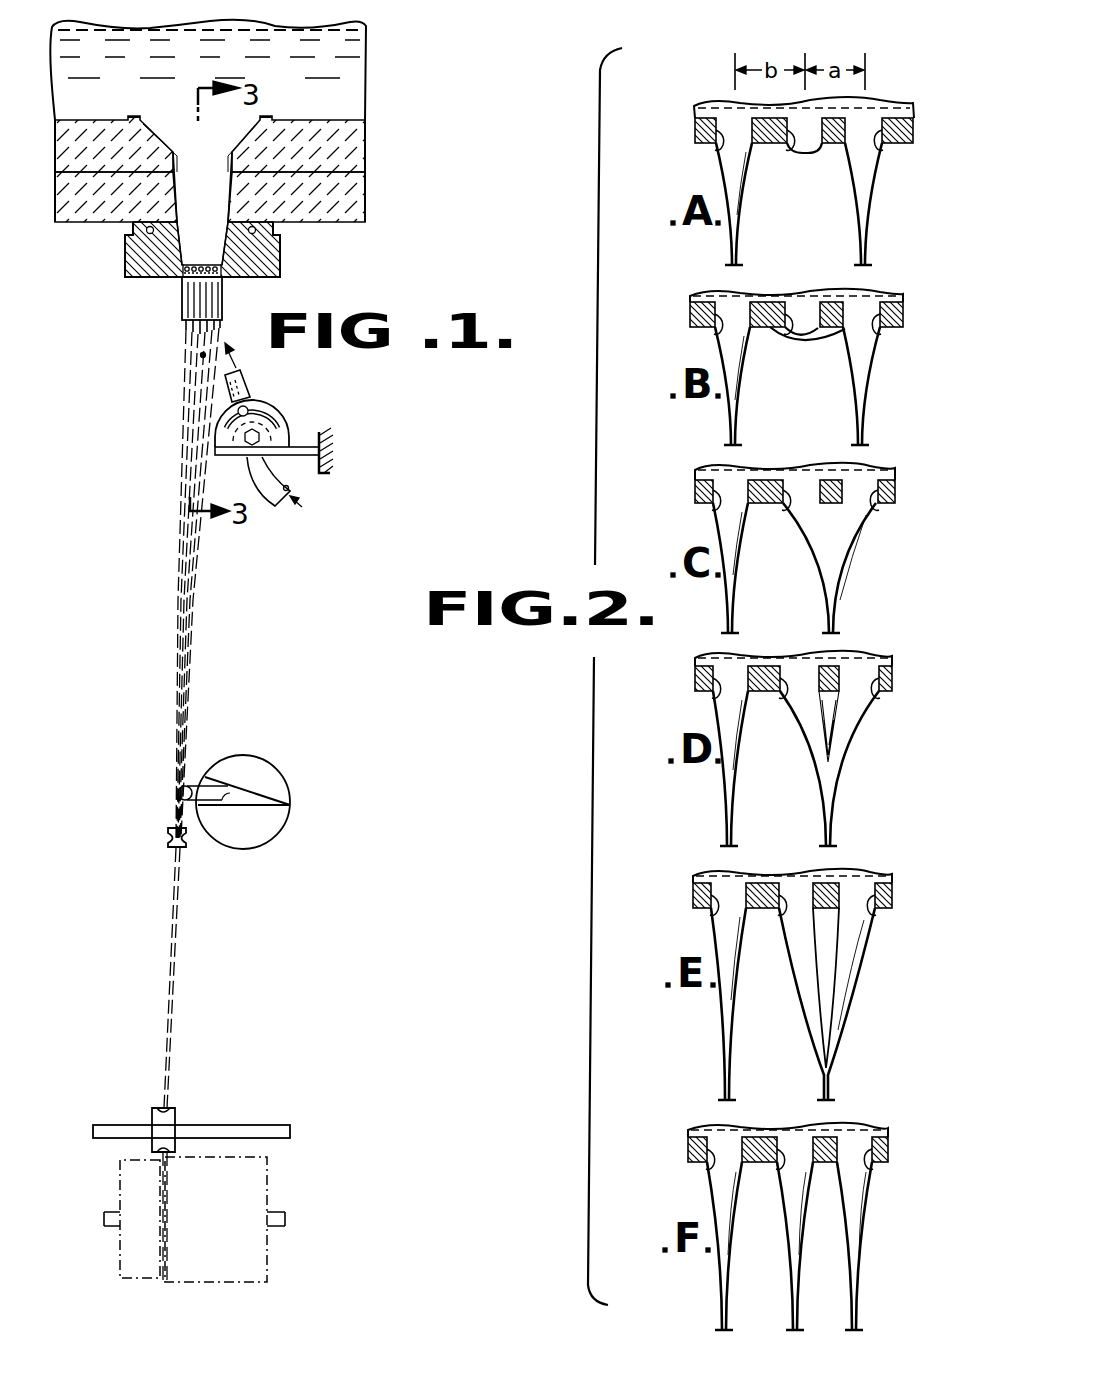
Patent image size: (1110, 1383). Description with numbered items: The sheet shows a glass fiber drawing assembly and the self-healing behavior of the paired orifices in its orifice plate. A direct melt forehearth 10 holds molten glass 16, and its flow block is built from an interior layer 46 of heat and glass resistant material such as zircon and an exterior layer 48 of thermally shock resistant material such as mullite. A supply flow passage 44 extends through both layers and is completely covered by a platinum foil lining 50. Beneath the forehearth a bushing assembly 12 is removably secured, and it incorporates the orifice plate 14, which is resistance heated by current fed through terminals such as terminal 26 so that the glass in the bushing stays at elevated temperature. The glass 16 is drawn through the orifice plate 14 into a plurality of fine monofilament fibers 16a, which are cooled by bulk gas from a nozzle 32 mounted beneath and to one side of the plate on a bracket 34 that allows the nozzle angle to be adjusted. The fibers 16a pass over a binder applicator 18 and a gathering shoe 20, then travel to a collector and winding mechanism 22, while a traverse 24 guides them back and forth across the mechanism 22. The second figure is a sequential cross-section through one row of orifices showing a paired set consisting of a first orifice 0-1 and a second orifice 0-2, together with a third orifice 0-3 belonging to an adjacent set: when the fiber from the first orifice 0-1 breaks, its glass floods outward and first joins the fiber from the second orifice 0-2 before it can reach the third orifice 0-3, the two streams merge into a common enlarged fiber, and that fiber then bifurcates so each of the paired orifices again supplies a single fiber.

In FIG. 1, the direct melt forehearth 10 is at (372, 82).
In FIG. 1, the molten glass 16 is at (368, 38).
In FIG. 1, the monofilament fibers 16a is at (198, 358).
In FIG. 1, the interior layer 46 is at (358, 154).
In FIG. 1, the exterior layer 48 is at (358, 205).
In FIG. 1, the platinum foil lining 50 is at (148, 118).
In FIG. 1, the supply flow passage 44 is at (210, 199).
In FIG. 1, the bushing assembly 12 is at (294, 256).
In FIG. 1, the orifice plate 14 is at (174, 281).
In FIG. 1, the terminal 26 is at (190, 307).
In FIG. 1, the nozzle 32 is at (250, 393).
In FIG. 1, the bracket 34 is at (316, 447).
In FIG. 1, the binder applicator 18 is at (272, 778).
In FIG. 1, the gathering shoe 20 is at (166, 846).
In FIG. 1, the traverse 24 is at (177, 1118).
In FIG. 1, the collector and winding mechanism 22 is at (266, 1186).
In FIG. 2, the orifice O-1 0-1 is at (798, 150).
In FIG. 2, the orifice O-2 0-2 is at (878, 146).
In FIG. 2, the orifice O-3 0-3 is at (720, 142).